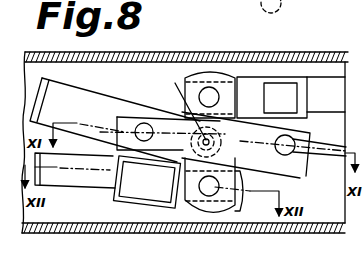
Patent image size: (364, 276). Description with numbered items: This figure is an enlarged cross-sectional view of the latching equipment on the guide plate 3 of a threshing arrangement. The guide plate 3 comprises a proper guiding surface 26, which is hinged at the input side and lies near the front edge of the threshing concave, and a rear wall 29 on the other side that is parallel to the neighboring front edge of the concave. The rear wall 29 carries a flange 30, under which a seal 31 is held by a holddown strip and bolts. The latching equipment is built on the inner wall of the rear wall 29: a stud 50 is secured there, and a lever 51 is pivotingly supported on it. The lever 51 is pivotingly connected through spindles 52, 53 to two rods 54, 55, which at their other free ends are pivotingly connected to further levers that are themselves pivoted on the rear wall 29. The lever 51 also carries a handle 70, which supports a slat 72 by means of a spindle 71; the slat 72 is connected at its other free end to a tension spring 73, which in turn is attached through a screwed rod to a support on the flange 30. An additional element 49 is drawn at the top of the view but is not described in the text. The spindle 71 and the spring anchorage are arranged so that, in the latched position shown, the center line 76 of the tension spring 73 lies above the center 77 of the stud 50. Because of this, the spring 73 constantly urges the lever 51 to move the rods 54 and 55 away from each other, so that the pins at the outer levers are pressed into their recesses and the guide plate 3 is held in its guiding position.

The guide plate 3 is at (172, 45).
The guiding surface 26 is at (291, 60).
The rear wall 29 is at (142, 67).
The flange 30 is at (95, 211).
The seal 31 is at (108, 233).
The pivot 49 is at (283, 4).
The stud 50 is at (221, 139).
The lever 51 is at (236, 164).
The spindle 52 is at (219, 96).
The spindle 53 is at (194, 185).
The rod 54 is at (60, 183).
The rod 55 is at (327, 112).
The handle 70 is at (79, 93).
The spindle 71 is at (150, 118).
The slat 72 is at (303, 160).
The tension spring 73 is at (320, 153).
The center line 76 is at (125, 117).
The center 77 is at (175, 84).